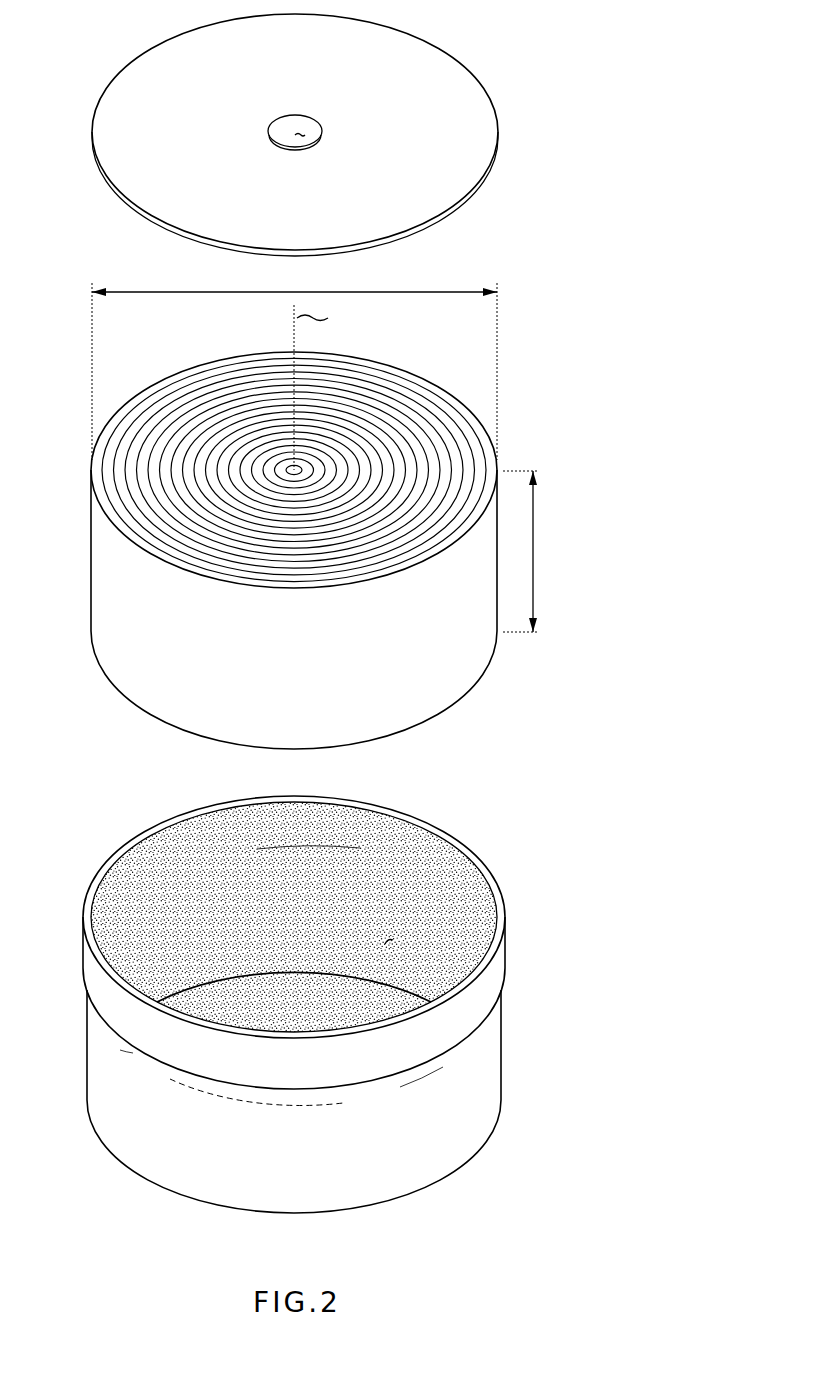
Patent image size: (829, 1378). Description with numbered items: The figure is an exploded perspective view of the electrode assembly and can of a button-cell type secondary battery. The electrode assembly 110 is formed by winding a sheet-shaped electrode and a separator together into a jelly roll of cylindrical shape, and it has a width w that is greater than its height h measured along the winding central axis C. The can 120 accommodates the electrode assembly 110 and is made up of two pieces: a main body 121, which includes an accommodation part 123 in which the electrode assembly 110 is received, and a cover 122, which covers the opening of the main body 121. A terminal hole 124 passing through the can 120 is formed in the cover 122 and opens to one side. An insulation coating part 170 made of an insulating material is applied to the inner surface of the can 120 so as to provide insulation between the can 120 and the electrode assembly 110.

The electrode assembly 110 is at (588, 553).
The can 120 is at (409, 609).
The main body 121 is at (491, 1054).
The cover 122 is at (458, 117).
The accommodation part 123 is at (383, 944).
The terminal hole 124 is at (313, 117).
The insulation coating part 170 is at (152, 907).